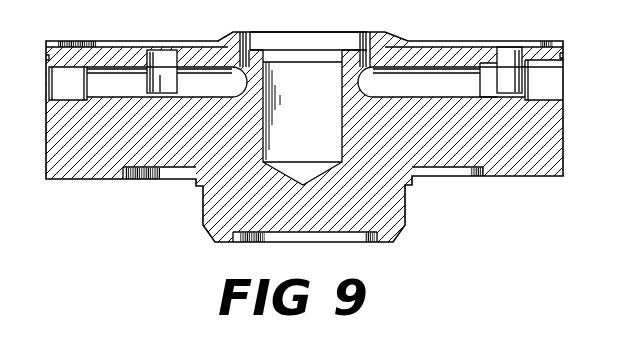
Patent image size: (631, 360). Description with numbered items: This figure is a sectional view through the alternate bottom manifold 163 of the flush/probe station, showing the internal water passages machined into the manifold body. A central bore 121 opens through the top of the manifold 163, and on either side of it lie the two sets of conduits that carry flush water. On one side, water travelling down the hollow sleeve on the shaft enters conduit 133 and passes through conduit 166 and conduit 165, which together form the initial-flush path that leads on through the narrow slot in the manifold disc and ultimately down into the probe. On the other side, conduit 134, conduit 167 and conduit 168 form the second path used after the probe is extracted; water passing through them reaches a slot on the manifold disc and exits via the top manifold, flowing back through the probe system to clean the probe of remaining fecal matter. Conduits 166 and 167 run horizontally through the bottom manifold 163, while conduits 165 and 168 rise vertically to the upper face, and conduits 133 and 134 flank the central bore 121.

The bore 121 is at (312, 78).
The conduit 133 is at (250, 52).
The conduit 134 is at (367, 52).
The alternate bottom manifold 163 is at (393, 231).
The conduit 165 is at (164, 58).
The conduit 166 is at (217, 95).
The conduit 167 is at (443, 78).
The conduit 168 is at (510, 55).